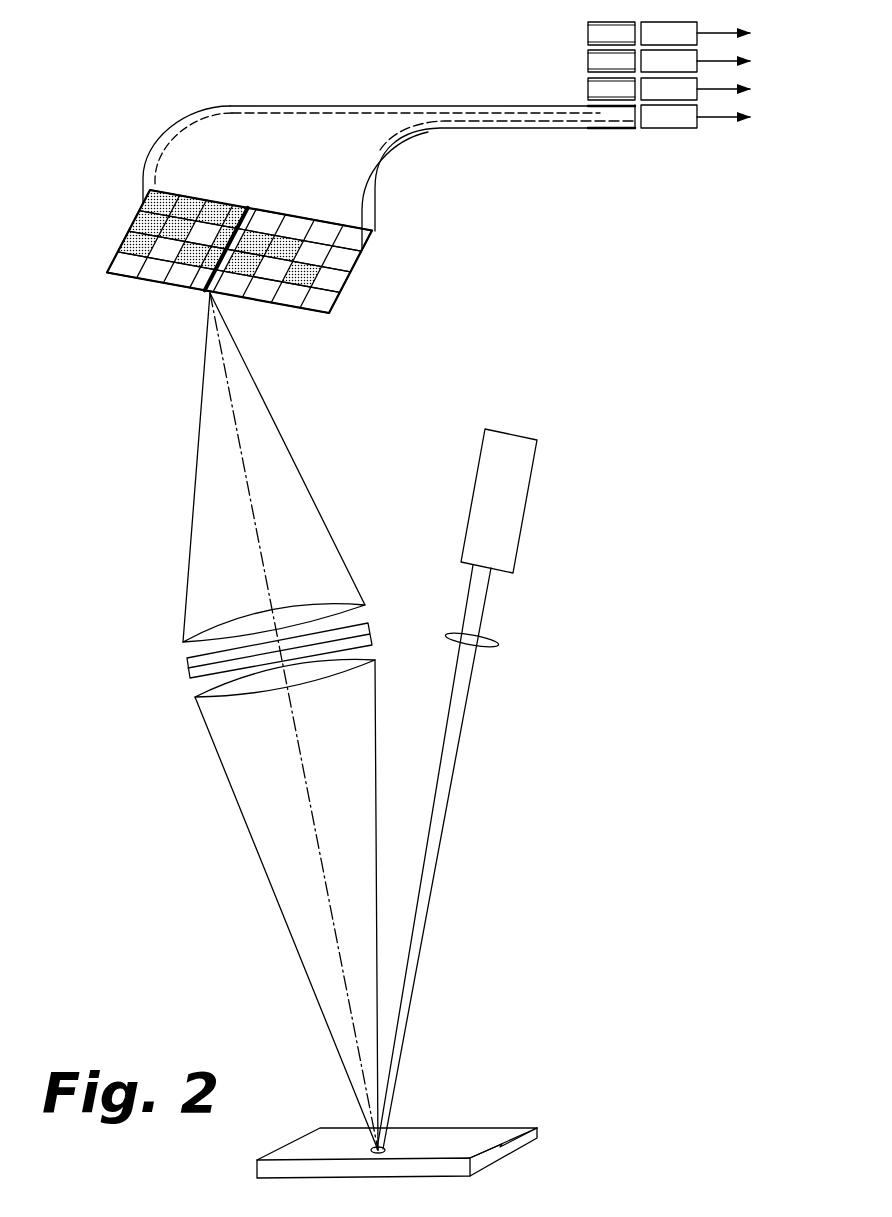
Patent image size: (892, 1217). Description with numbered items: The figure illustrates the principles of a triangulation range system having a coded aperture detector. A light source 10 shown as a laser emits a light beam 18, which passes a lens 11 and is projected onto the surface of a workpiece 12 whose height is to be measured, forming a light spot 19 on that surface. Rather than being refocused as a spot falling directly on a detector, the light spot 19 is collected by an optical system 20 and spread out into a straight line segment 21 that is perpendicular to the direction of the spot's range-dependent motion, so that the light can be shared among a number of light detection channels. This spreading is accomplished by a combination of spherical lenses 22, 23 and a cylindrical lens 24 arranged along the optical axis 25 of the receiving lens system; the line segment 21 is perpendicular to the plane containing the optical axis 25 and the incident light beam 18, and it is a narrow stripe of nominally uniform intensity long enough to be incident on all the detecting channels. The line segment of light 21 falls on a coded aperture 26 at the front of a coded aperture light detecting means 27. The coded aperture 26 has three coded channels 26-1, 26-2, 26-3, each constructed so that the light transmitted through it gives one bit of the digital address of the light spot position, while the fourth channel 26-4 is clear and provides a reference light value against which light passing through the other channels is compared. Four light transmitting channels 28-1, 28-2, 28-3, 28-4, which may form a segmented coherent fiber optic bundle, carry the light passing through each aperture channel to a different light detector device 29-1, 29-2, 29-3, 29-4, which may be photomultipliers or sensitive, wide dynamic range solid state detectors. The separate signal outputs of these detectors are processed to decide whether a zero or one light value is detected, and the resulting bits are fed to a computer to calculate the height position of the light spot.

The laser 10 is at (523, 497).
The lens 11 is at (491, 641).
The sample 12 is at (490, 1098).
The light beam 18 is at (463, 723).
The light spot 19 is at (386, 1148).
The optical system 20 is at (210, 666).
The line segment of light 21 is at (206, 281).
The spherical lens 22 is at (216, 628).
The spherical lens 23 is at (231, 691).
The cylindrical lens 24 is at (190, 669).
The optical axis 25 is at (313, 821).
The coded aperture 26 is at (263, 277).
The coded channel 26-1 is at (373, 237).
The coded channel 26-2 is at (360, 256).
The coded channel 26-3 is at (347, 278).
The clear channel 26-4 is at (335, 300).
The coded aperture light detecting means 27 is at (266, 80).
The light transmitting channel 28-1 is at (578, 125).
The light transmitting channel 28-2 is at (588, 92).
The light transmitting channel 28-3 is at (588, 62).
The light transmitting channel 28-4 is at (588, 32).
The light detector device 29-1 is at (707, 100).
The light detector device 29-2 is at (707, 73).
The light detector device 29-3 is at (707, 45).
The light detector device 29-4 is at (697, 25).